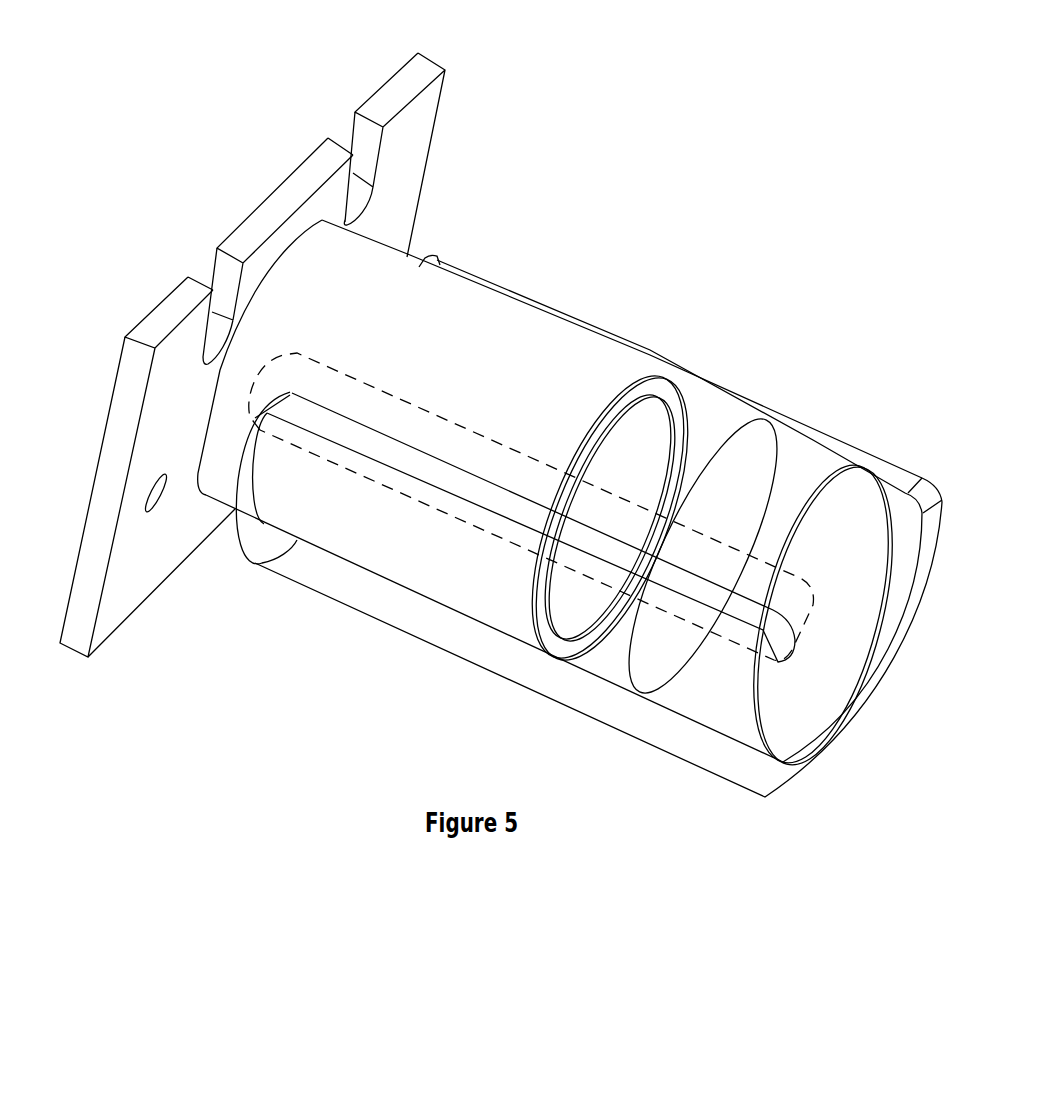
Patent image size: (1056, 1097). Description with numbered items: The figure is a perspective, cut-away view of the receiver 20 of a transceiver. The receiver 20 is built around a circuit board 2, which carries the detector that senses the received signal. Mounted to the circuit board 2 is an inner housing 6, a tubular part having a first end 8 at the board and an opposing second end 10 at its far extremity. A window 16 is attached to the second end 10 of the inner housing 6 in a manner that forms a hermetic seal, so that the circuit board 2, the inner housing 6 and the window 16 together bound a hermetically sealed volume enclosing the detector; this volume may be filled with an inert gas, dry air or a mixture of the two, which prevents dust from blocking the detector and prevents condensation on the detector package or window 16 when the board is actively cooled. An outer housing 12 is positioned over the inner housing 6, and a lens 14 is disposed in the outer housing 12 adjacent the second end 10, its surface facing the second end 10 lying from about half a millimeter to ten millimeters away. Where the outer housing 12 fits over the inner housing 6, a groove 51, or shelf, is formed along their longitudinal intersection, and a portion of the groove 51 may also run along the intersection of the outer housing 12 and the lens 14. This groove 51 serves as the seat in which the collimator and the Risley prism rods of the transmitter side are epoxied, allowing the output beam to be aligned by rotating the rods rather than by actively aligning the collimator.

The receiver 20 is at (762, 73).
The circuit board 2 is at (383, 94).
The first end 8 is at (270, 263).
The outer housing 12 is at (793, 779).
The inner housing 6 is at (410, 353).
The groove 51 is at (476, 418).
The second end 10 is at (617, 410).
The window 16 is at (677, 402).
The lens 14 is at (818, 445).